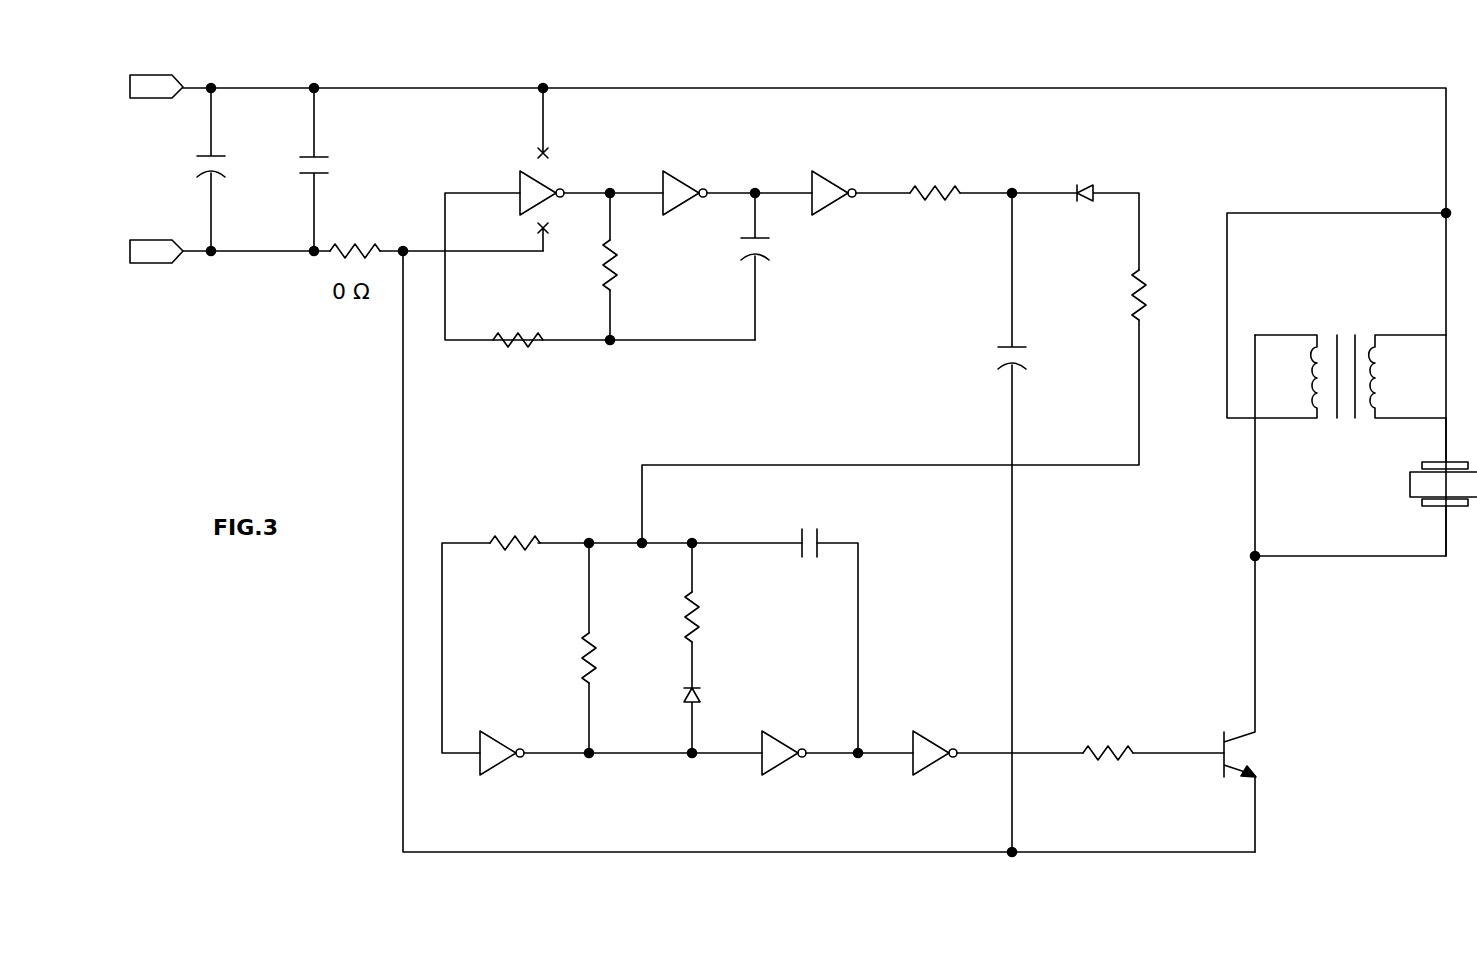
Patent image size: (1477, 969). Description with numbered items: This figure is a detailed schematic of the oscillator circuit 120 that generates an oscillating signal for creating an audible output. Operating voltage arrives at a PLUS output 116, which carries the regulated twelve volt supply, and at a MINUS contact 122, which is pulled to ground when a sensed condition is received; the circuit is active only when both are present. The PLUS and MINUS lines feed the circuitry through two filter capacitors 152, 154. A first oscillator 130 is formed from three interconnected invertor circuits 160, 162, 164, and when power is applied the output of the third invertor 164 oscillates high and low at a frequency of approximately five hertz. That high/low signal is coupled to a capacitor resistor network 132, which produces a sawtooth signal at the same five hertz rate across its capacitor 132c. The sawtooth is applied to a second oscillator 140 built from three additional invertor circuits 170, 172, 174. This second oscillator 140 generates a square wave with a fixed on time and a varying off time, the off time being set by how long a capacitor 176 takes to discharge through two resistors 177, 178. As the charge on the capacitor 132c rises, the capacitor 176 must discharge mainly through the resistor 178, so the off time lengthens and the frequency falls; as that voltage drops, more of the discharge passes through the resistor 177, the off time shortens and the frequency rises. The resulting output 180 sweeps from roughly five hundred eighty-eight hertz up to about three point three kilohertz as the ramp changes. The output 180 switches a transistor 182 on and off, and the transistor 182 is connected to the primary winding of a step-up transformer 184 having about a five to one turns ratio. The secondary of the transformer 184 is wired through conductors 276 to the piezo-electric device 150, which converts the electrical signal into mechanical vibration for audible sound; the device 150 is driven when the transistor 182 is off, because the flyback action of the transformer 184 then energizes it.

The PLUS output 116 is at (175, 77).
The MINUS contact 122 is at (150, 246).
The oscillator circuit 120 is at (740, 76).
The filter capacitor 152 is at (214, 155).
The filter capacitor 154 is at (320, 155).
The first oscillator 130 is at (672, 248).
The invertor circuit 160 is at (530, 192).
The invertor circuit 162 is at (675, 191).
The third invertor 164 is at (822, 192).
The capacitor resistor network 132 is at (926, 507).
The capacitor 132c is at (1010, 372).
The resistor 177 is at (1142, 318).
The second oscillator 140 is at (762, 693).
The invertor circuit 170 is at (495, 762).
The invertor circuit 172 is at (770, 745).
The invertor circuit 174 is at (925, 745).
The capacitor 176 is at (820, 540).
The resistor 178 is at (590, 668).
The output 180 is at (1037, 753).
The transistor 182 is at (1258, 740).
The step-up transformer 184 is at (1349, 428).
The conductors 276 is at (1410, 418).
The piezo-electric device 150 is at (1417, 482).